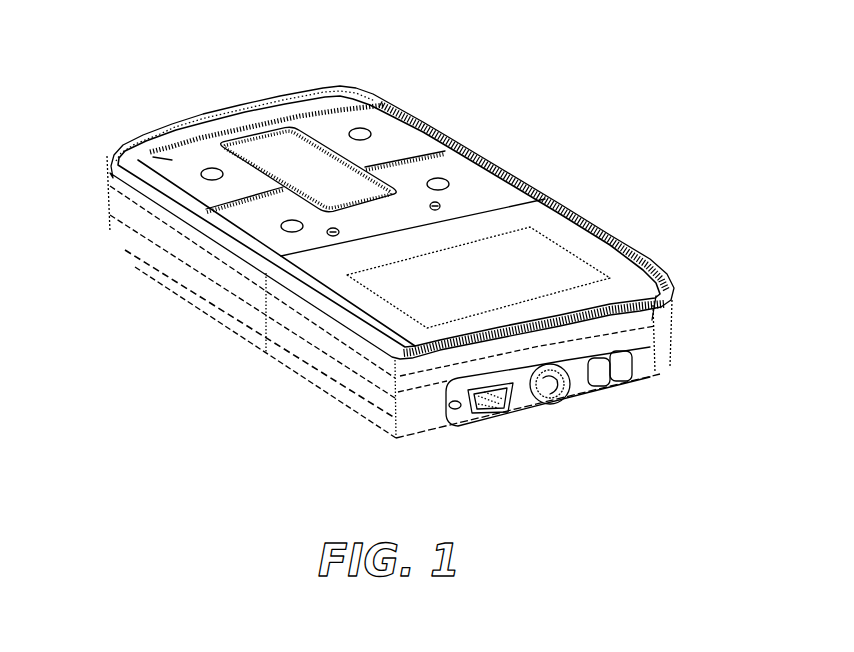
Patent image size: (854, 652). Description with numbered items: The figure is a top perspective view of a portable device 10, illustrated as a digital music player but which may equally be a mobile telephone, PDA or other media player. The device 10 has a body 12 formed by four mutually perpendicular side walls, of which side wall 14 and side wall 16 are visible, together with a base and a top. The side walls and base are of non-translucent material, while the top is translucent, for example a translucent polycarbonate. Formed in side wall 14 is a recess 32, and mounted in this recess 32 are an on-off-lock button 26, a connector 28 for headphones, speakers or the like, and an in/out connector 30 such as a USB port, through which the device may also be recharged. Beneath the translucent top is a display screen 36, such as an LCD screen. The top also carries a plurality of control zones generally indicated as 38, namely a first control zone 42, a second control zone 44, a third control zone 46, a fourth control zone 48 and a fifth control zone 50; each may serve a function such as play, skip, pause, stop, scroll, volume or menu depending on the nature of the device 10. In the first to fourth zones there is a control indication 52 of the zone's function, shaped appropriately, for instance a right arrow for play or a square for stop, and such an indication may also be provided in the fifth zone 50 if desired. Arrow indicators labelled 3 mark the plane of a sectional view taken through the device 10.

The portable device 10 is at (578, 106).
The body 12 is at (677, 318).
The side wall 14 is at (652, 320).
The side wall 16 is at (303, 348).
The on-off-lock button 26 is at (622, 384).
The connector 28 is at (552, 402).
The in/out connector 30 is at (490, 400).
The recess 32 is at (643, 357).
The display screen 36 is at (547, 262).
The control zones 38 is at (424, 120).
The first control zone 42 is at (437, 162).
The second control zone 44 is at (287, 243).
The third control zone 46 is at (173, 162).
The fourth control zone 48 is at (341, 108).
The fifth control zone 50 is at (263, 149).
The control indication 52 is at (362, 128).
The section line FIG. 3 is at (163, 109).